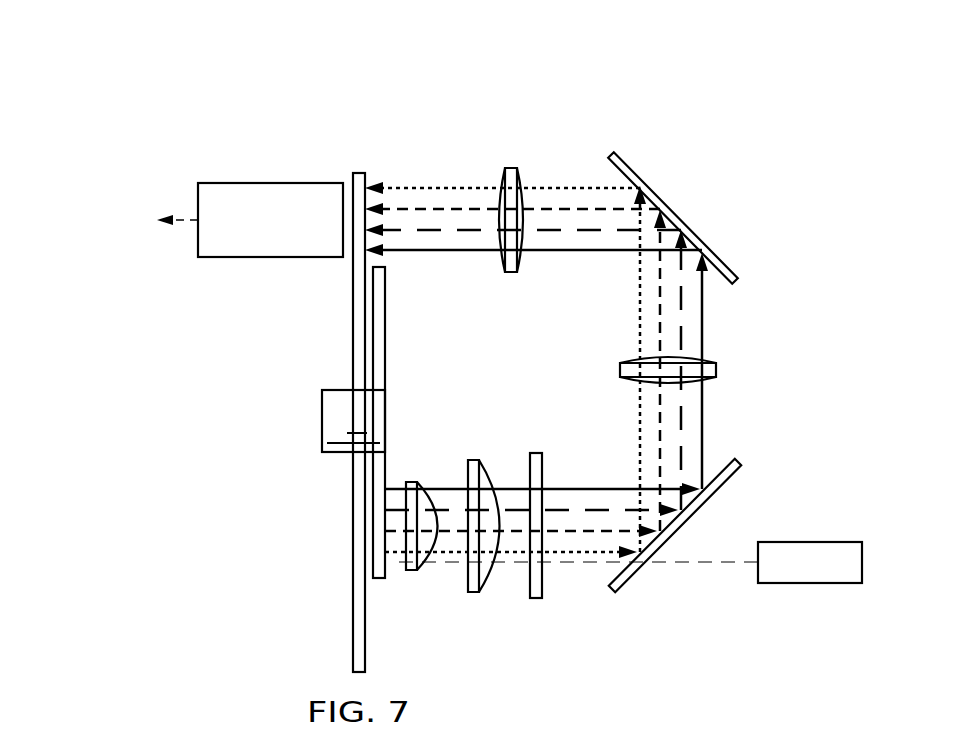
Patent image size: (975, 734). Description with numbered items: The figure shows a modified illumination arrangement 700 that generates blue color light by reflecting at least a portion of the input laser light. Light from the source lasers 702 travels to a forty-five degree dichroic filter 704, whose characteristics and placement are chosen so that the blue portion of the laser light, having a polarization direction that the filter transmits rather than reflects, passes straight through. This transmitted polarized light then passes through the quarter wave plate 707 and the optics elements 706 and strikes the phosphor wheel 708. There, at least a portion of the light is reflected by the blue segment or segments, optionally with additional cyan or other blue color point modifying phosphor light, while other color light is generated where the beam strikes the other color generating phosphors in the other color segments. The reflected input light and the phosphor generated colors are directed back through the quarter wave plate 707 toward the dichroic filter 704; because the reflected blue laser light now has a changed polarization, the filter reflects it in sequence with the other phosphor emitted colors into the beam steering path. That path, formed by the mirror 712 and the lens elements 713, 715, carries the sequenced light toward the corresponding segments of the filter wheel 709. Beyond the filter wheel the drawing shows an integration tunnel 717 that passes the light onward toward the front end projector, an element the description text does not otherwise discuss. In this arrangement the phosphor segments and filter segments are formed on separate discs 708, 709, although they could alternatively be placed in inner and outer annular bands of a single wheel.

The modified arrangement 700 is at (255, 94).
The source lasers 702 is at (810, 583).
The 45° dichroic filter 704 is at (635, 580).
The optics elements 706 is at (477, 437).
The quarter wave plate 707 is at (533, 598).
The phosphor wheel 708 is at (387, 360).
The filter wheel 709 is at (353, 360).
The mirror 712 is at (652, 157).
The lens element 713 is at (722, 367).
The lens element 715 is at (510, 168).
The integration tunnel 717 is at (270, 183).